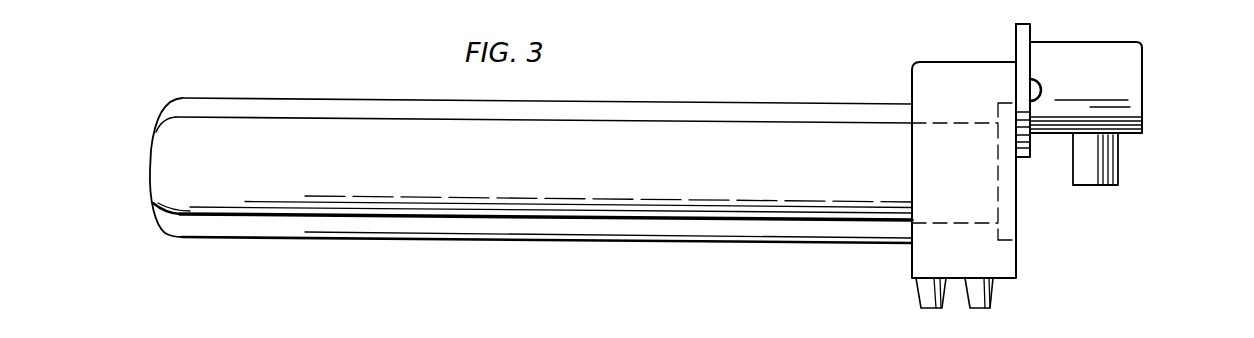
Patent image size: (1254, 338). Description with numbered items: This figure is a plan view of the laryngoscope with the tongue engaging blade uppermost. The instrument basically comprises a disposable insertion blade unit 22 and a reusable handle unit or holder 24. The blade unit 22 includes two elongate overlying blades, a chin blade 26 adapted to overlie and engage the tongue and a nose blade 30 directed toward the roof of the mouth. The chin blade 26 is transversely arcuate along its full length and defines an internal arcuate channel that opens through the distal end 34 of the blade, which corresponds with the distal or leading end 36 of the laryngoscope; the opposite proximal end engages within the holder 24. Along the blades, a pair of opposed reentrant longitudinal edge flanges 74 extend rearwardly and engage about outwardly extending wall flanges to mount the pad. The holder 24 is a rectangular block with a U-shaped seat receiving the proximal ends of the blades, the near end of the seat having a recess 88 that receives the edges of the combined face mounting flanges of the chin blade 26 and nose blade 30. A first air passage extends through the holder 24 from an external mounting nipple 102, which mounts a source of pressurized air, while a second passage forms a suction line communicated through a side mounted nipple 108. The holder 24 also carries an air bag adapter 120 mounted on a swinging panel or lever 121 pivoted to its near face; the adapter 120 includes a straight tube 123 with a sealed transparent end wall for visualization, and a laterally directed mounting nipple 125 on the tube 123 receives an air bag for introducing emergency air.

The disposable insertion blade unit 22 is at (590, 242).
The handle unit or holder 24 is at (1022, 260).
The chin blade 26 is at (630, 126).
The nose blade 30 is at (343, 243).
The distal end 34 is at (148, 170).
The distal or leading end 36 is at (143, 136).
The reentrant longitudinal edge flanges 74 is at (430, 223).
The recess 88 is at (1007, 203).
The external mounting nipple 102 is at (927, 290).
The side mounted nipple 108 is at (995, 290).
The air bag adapter 120 is at (1148, 62).
The swinging panel or lever 121 is at (1028, 150).
The straight tube 123 is at (1088, 52).
The laterally directed mounting nipple 125 is at (1120, 158).